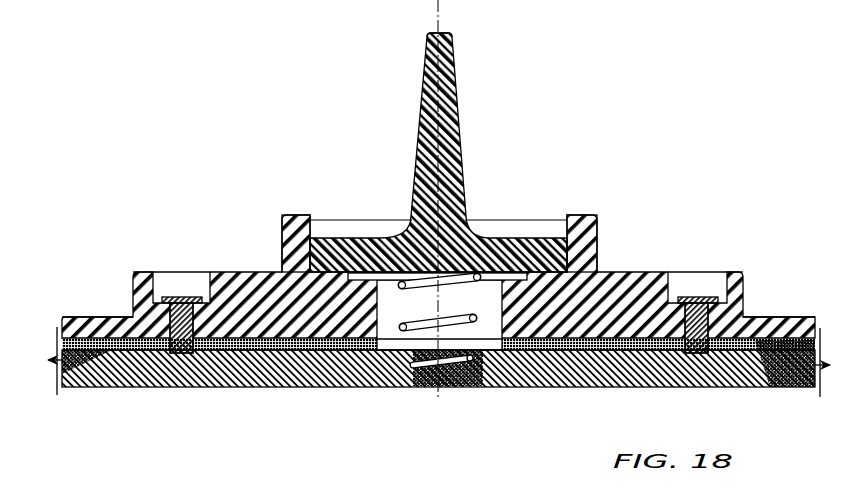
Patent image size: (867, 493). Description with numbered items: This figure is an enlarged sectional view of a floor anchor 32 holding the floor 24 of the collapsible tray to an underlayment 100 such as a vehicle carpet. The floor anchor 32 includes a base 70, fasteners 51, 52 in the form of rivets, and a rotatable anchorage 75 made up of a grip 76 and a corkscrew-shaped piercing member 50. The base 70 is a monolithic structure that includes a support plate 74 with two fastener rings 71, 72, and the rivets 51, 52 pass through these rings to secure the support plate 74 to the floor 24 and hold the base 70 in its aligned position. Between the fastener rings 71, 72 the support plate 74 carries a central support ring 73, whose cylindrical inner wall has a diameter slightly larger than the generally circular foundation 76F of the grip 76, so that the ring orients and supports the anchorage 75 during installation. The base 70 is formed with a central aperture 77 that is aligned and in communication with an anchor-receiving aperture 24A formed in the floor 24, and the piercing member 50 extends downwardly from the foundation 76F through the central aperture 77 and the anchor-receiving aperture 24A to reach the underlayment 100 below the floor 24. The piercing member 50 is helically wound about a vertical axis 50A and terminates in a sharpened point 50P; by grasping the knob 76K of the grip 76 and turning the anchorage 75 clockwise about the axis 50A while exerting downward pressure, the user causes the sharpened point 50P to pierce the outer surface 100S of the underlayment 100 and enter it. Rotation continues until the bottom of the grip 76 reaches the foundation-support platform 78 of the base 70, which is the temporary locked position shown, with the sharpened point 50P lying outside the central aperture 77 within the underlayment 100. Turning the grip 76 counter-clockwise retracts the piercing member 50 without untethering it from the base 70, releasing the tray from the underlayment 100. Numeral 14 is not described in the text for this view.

The circuit board 14 is at (83, 342).
The floor 24 is at (665, 345).
The anchor-receiving aperture 24A is at (482, 344).
The floor anchor 32 is at (436, 217).
The piercing member 50 is at (448, 255).
The vertical axis 50A is at (440, 24).
The sharpened point 50P is at (407, 386).
The fastener 51 is at (703, 296).
The fastener 52 is at (181, 303).
The base 70 is at (428, 239).
The fastener ring 71 is at (679, 270).
The fastener ring 72 is at (165, 270).
The central support ring 73 is at (278, 212).
The support plate 74 is at (793, 317).
The anchorage 75 is at (461, 152).
The grip 76 is at (438, 152).
The foundation 76F is at (331, 237).
The knob 76K is at (455, 80).
The central aperture 77 is at (385, 316).
The foundation-support platform 78 is at (566, 212).
The underlayment 100 is at (439, 351).
The outer surface 100S is at (117, 347).